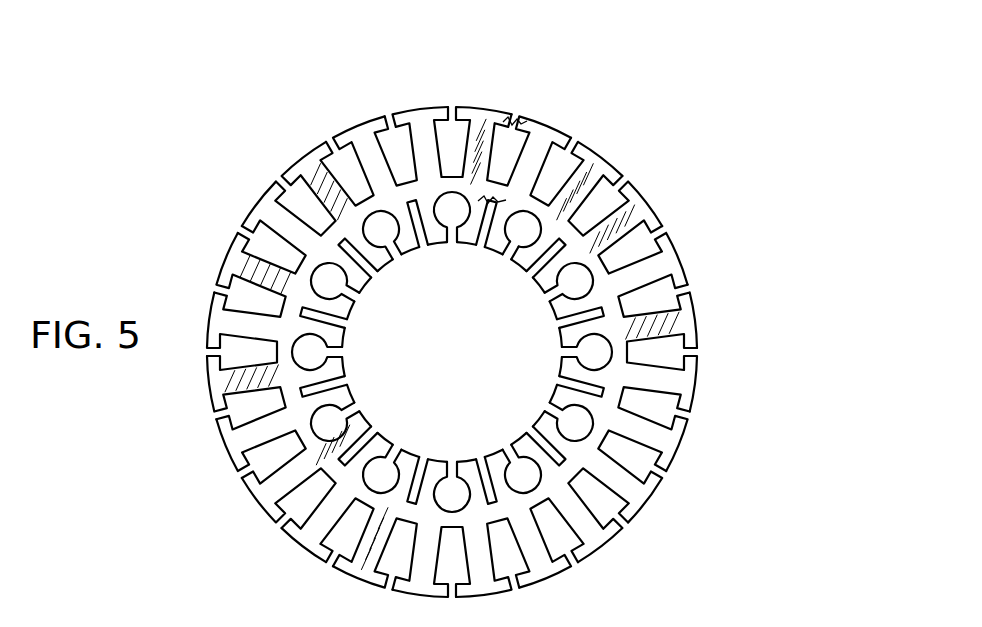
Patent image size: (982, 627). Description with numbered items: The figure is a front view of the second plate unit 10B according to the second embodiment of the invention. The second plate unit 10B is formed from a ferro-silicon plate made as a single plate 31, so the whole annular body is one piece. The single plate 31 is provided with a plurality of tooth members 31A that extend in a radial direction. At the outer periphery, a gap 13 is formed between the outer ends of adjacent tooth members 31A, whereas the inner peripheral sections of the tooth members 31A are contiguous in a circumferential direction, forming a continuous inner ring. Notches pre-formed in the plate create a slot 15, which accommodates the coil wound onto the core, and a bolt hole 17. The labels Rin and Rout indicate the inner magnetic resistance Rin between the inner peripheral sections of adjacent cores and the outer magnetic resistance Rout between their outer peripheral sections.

The second plate unit 10B is at (452, 319).
The single plate 31 is at (452, 319).
The tooth member 31A is at (565, 142).
The slot 15 is at (592, 176).
The gap 13 is at (593, 260).
The bolt hole 17 is at (498, 287).
The outer magnetic resistance Rout is at (544, 100).
The inner magnetic resistance Rin is at (473, 249).